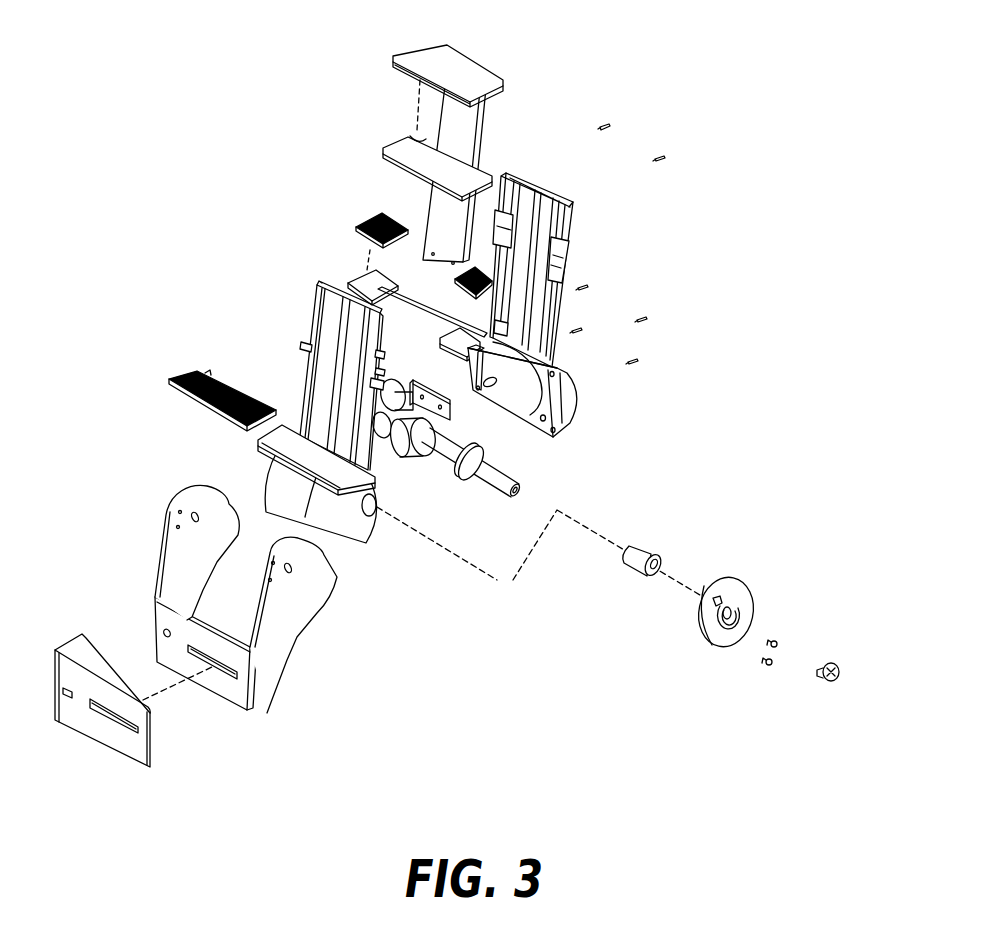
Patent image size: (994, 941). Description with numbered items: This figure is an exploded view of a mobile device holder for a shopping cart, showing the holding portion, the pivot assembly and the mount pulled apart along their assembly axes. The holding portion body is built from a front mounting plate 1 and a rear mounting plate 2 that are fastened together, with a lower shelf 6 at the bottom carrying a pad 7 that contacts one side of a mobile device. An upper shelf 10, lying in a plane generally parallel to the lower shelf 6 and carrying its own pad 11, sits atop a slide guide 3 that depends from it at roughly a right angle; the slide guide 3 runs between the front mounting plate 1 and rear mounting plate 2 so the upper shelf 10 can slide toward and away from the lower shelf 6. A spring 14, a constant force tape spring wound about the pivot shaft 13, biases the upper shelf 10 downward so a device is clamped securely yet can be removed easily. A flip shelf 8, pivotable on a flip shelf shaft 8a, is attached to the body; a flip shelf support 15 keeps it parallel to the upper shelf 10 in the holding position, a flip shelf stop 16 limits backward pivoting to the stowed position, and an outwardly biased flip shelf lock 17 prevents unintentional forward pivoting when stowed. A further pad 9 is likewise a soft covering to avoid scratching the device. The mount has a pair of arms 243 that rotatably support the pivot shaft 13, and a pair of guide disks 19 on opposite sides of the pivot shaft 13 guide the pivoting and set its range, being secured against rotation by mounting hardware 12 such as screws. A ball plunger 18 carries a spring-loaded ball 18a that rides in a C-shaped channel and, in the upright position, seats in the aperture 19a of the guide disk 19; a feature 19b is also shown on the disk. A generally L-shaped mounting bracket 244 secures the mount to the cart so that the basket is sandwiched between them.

The front mounting plate 1 is at (372, 535).
The rear mounting plate 2 is at (572, 403).
The slide guide 3 is at (438, 115).
The lower shelf 6 is at (272, 445).
The pad 7 is at (169, 379).
The flip shelf 8 is at (368, 283).
The flip shelf shaft 8a is at (430, 312).
The pad 9 is at (356, 228).
The upper shelf 10 is at (432, 63).
The pad 11 is at (414, 138).
The mounting hardware 12 is at (778, 644).
The pivot shaft 13 is at (489, 488).
The spring 14 is at (455, 404).
The flip shelf support 15 is at (300, 324).
The flip shelf stop 16 is at (573, 262).
The flip shelf lock 17 is at (574, 235).
The ball plunger 18 is at (634, 548).
The ball 18a is at (663, 565).
The guide disk 19 is at (744, 592).
The aperture 19a is at (746, 624).
The disc tab 19b is at (717, 582).
The arms 243 is at (173, 553).
The mounting bracket 244 is at (148, 770).